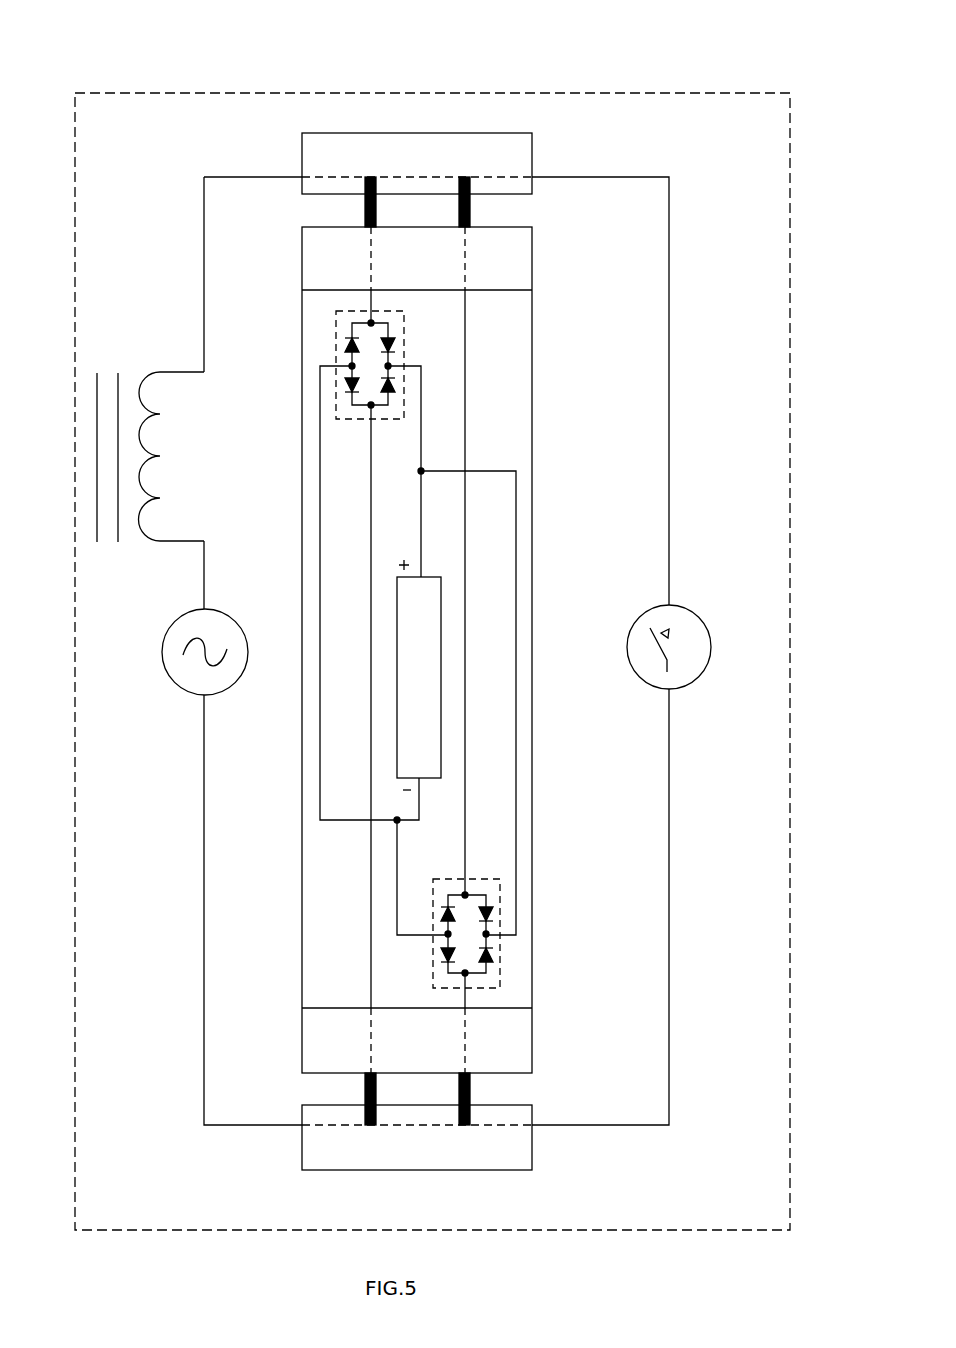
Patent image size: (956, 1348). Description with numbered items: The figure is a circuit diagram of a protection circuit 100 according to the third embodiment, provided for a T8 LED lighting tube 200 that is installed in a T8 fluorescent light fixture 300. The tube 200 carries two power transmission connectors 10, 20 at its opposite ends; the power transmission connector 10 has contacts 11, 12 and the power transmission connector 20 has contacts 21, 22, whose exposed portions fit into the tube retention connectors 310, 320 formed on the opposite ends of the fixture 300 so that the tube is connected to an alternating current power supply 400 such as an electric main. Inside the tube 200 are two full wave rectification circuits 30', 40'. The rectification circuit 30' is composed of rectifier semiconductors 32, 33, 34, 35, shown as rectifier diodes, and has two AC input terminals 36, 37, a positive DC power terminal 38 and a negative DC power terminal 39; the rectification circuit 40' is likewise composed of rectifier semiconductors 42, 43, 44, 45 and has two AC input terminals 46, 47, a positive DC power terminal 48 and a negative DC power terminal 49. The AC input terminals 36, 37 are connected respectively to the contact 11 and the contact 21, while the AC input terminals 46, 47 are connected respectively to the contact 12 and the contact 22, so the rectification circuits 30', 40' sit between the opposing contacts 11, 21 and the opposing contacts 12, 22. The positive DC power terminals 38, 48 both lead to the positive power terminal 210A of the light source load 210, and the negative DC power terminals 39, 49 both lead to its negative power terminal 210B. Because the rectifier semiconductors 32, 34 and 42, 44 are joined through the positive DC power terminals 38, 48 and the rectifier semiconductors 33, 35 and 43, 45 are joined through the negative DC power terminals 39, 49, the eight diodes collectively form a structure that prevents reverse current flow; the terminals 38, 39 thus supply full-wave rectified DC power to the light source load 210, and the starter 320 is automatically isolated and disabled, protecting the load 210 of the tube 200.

The T8 fluorescent light fixture 300 is at (150, 92).
The tube retention connector 310 is at (397, 145).
The starter 320 is at (712, 638).
The alternating current power supply 400 is at (163, 640).
The protection circuit 100 is at (295, 778).
The T8 LED lighting tube 200 is at (302, 726).
The power transmission connector 10 is at (517, 265).
The power transmission connector 20 is at (337, 1040).
The contact 11 is at (365, 213).
The contact 12 is at (471, 213).
The contact 21 is at (365, 1097).
The contact 22 is at (471, 1093).
The rectification circuit 30' is at (462, 356).
The rectifier semiconductor 32 is at (346, 342).
The rectifier semiconductor 33 is at (396, 343).
The rectifier semiconductor 34 is at (346, 388).
The rectifier semiconductor 35 is at (396, 385).
The AC input terminal 36 is at (371, 300).
The AC input terminal 37 is at (371, 430).
The positive DC power terminal 38 is at (423, 417).
The negative DC power terminal 39 is at (320, 554).
The rectification circuit 40' is at (514, 911).
The rectifier semiconductor 42 is at (440, 914).
The rectifier semiconductor 43 is at (495, 907).
The rectifier semiconductor 44 is at (440, 957).
The rectifier semiconductor 45 is at (500, 950).
The AC input terminal 46 is at (470, 1000).
The AC input terminal 47 is at (468, 692).
The positive DC power terminal 48 is at (516, 528).
The negative DC power terminal 49 is at (393, 883).
The light source load 210 is at (426, 610).
The positive power terminal 210A is at (420, 514).
The negative power terminal 210B is at (420, 798).